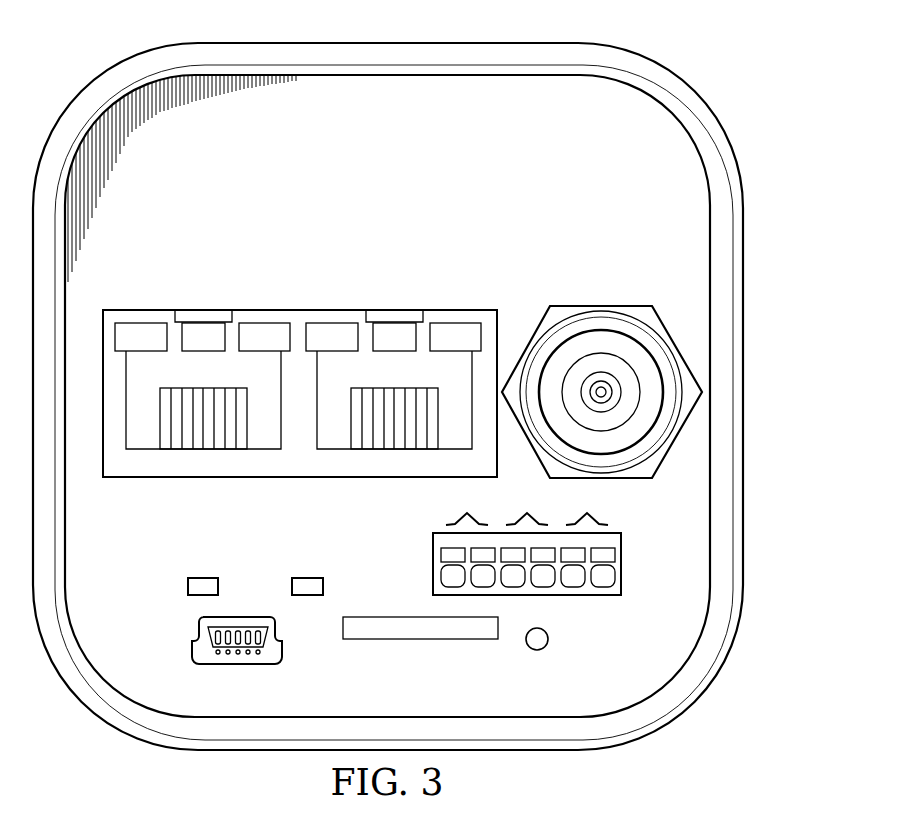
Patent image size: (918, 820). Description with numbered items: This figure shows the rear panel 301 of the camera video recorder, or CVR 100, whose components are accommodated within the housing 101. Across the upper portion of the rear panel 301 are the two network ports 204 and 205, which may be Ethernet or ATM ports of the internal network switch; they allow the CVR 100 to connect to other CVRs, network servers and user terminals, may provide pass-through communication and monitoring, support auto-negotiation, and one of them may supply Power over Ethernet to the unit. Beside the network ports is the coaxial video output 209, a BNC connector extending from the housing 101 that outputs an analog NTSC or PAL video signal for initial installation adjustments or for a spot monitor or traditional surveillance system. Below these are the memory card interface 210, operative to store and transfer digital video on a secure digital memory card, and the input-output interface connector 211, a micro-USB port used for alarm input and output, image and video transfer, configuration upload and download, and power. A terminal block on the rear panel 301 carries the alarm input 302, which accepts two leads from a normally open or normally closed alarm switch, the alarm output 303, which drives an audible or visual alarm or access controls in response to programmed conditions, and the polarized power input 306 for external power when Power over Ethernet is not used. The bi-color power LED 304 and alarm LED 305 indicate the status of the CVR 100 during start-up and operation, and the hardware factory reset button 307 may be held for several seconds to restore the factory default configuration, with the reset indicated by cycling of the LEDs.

The CVR 100 is at (90, 57).
The housing 101 is at (743, 357).
The network port 204 is at (200, 338).
The network port 205 is at (398, 338).
The coaxial video output 209 is at (600, 305).
The memory card interface 210 is at (193, 645).
The input-output interface connector 211 is at (422, 639).
The rear panel 301 is at (695, 228).
The alarm input 302 is at (467, 503).
The alarm output 303 is at (527, 503).
The power LED 304 is at (203, 578).
The alarm LED 305 is at (306, 578).
The polarized power input 306 is at (587, 503).
The hardware factory reset button 307 is at (540, 650).